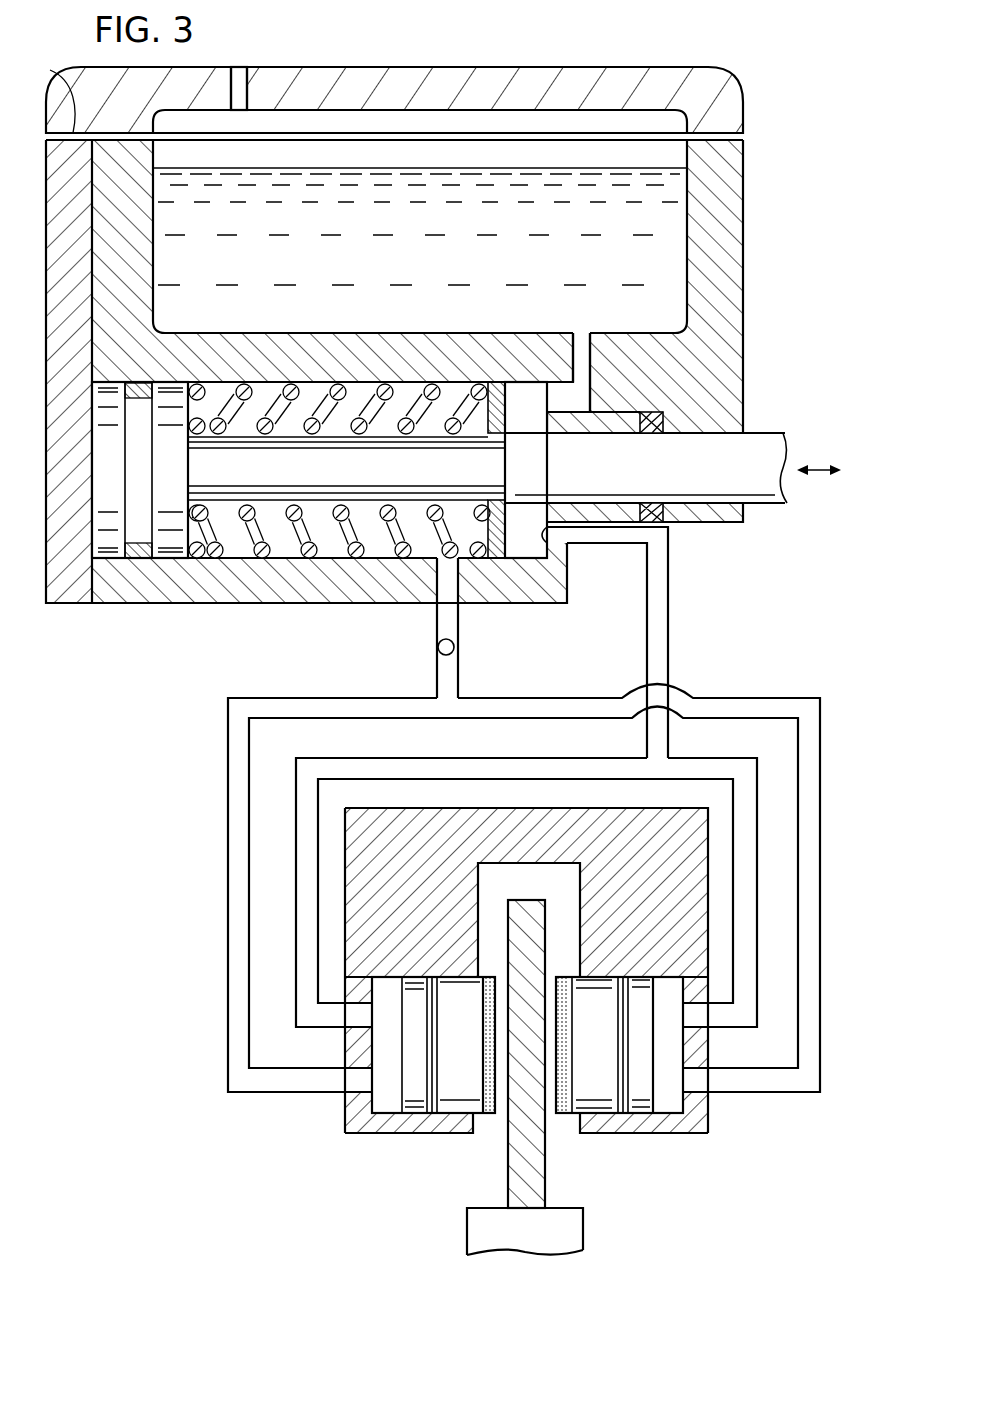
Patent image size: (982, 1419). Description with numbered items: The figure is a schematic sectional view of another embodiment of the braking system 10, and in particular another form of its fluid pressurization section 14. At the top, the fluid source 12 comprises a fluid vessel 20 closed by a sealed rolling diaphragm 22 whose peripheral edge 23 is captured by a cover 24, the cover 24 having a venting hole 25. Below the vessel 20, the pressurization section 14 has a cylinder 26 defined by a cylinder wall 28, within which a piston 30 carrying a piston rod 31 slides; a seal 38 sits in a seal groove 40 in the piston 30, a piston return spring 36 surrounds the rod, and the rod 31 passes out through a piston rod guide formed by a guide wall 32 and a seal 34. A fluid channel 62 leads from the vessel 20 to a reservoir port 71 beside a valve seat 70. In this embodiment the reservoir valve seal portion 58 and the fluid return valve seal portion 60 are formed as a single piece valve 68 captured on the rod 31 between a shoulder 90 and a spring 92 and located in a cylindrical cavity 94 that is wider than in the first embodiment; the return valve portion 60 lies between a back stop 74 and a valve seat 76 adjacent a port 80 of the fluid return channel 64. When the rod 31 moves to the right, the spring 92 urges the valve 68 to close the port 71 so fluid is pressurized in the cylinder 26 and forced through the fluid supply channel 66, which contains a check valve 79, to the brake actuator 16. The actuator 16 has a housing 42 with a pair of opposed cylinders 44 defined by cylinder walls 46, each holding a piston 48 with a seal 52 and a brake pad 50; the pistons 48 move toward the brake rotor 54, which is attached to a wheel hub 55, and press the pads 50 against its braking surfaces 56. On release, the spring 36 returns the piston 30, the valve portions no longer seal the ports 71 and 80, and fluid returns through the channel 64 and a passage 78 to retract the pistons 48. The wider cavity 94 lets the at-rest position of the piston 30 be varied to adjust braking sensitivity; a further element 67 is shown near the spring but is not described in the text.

The braking system 10 is at (133, 707).
The fluid source 12 is at (760, 255).
The fluid pressurization section 14 is at (770, 411).
The brake actuator 16 is at (786, 688).
The fluid vessel 20 is at (735, 200).
The sealed rolling diaphragm 22 is at (724, 84).
The peripheral edge 23 is at (48, 89).
The cover 24 is at (497, 67).
The venting hole 25 is at (240, 67).
The cylinder 26 is at (222, 567).
The cylinder wall 28 is at (99, 560).
The piston 30 is at (124, 469).
The piston rod 31 is at (785, 480).
The guide wall 32 is at (718, 433).
The seal 34 is at (660, 522).
The piston return spring 36 is at (235, 560).
The seal 38 is at (143, 387).
The seal groove 40 is at (120, 418).
The housing 42 is at (411, 868).
The cylinder 44 is at (385, 1118).
The cylinder wall 46 is at (385, 1097).
The piston 48 is at (460, 1000).
The brake pad 50 is at (497, 1115).
The seal 52 is at (433, 1055).
The brake rotor 54 is at (602, 1229).
The wheel hub 55 is at (495, 1232).
The braking surface 56 is at (545, 1170).
The reservoir valve seal portion 58 is at (524, 393).
The fluid return valve seal portion 60 is at (500, 590).
The fluid channel 62 is at (583, 397).
The fluid return channel 64 is at (668, 602).
The fluid supply channel 66 is at (538, 697).
The spring end 67 is at (440, 552).
The diaphragm type valve 68 is at (497, 390).
The valve seat 70 is at (540, 433).
The reservoir port 71 is at (580, 435).
The back stop 74 is at (500, 500).
The valve seat 76 is at (552, 560).
The passage 78 is at (478, 560).
The check valve 79 is at (438, 647).
The port 80 is at (560, 540).
The shoulder 90 is at (507, 467).
The spring 92 is at (283, 560).
The cylindrical cavity 94 is at (563, 333).